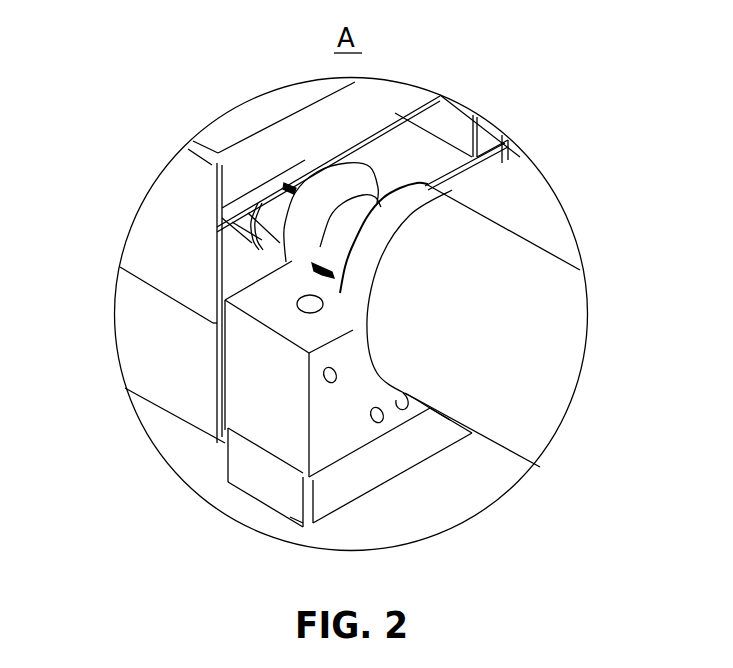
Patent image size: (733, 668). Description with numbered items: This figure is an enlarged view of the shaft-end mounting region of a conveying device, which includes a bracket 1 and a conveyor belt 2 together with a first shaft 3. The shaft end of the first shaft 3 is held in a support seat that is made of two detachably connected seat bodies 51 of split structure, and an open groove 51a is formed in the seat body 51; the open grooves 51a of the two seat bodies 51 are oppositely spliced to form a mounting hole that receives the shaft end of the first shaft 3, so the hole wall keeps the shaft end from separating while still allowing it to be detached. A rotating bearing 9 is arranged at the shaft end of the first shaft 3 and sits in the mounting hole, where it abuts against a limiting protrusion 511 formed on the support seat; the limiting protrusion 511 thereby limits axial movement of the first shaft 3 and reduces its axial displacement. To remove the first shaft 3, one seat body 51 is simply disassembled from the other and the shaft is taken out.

The bracket 1 is at (177, 328).
The conveyor belt 2 is at (545, 290).
The first shaft 3 is at (355, 218).
The rotating bearing 9 is at (405, 212).
The seat body 51 is at (252, 398).
The open groove 51a is at (245, 220).
The limiting protrusion 511 is at (312, 266).